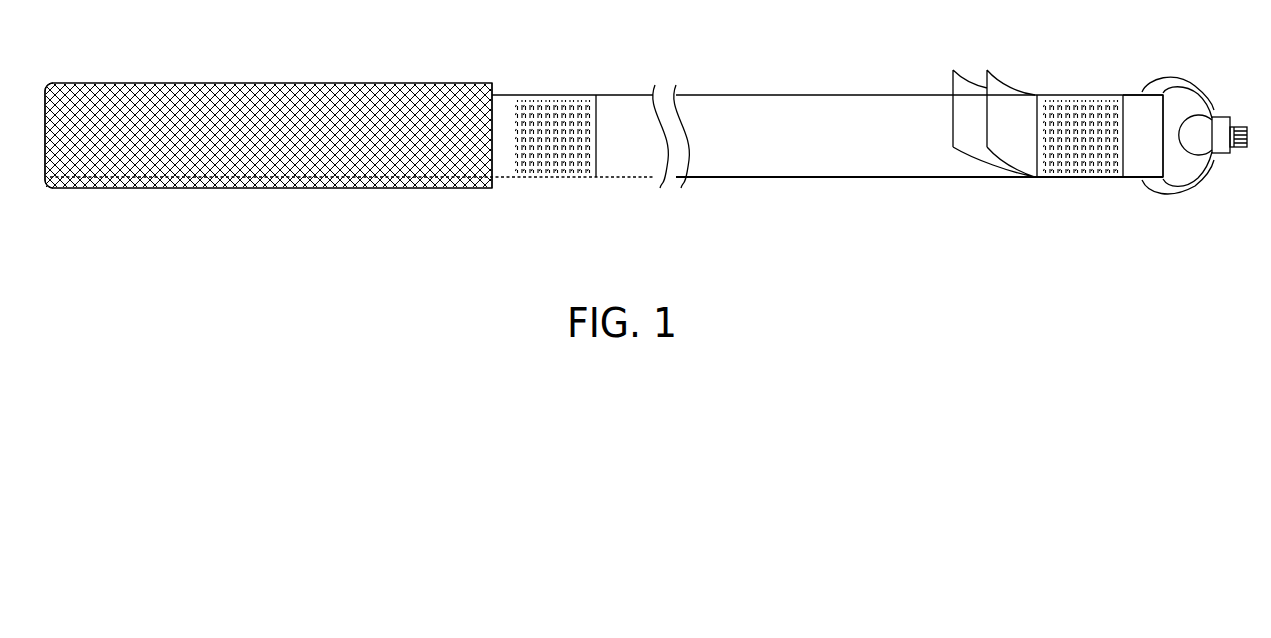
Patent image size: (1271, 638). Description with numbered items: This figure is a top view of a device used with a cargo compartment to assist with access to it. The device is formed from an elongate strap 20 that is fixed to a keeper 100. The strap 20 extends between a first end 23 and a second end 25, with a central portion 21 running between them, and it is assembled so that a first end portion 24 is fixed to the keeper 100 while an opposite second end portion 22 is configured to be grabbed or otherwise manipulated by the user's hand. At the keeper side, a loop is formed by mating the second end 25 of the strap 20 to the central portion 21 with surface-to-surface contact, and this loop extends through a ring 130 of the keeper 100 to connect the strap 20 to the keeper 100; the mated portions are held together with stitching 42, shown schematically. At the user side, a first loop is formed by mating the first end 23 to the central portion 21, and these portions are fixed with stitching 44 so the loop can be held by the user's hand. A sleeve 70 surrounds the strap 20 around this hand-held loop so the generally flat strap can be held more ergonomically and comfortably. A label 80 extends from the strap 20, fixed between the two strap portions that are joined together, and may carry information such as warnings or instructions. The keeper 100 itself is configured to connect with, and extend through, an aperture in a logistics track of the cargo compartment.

The elongate strap 20 is at (606, 113).
The central portion 21 is at (743, 106).
The second end portion 22 is at (45, 136).
The first end 23 is at (569, 108).
The first end portion 24 is at (1150, 125).
The second end 25 is at (1075, 108).
The stitching 42 is at (1073, 163).
The stitching 44 is at (561, 162).
The sleeve 70 is at (167, 96).
The label 80 is at (1000, 100).
The keeper 100 is at (1222, 132).
The ring 130 is at (1184, 192).